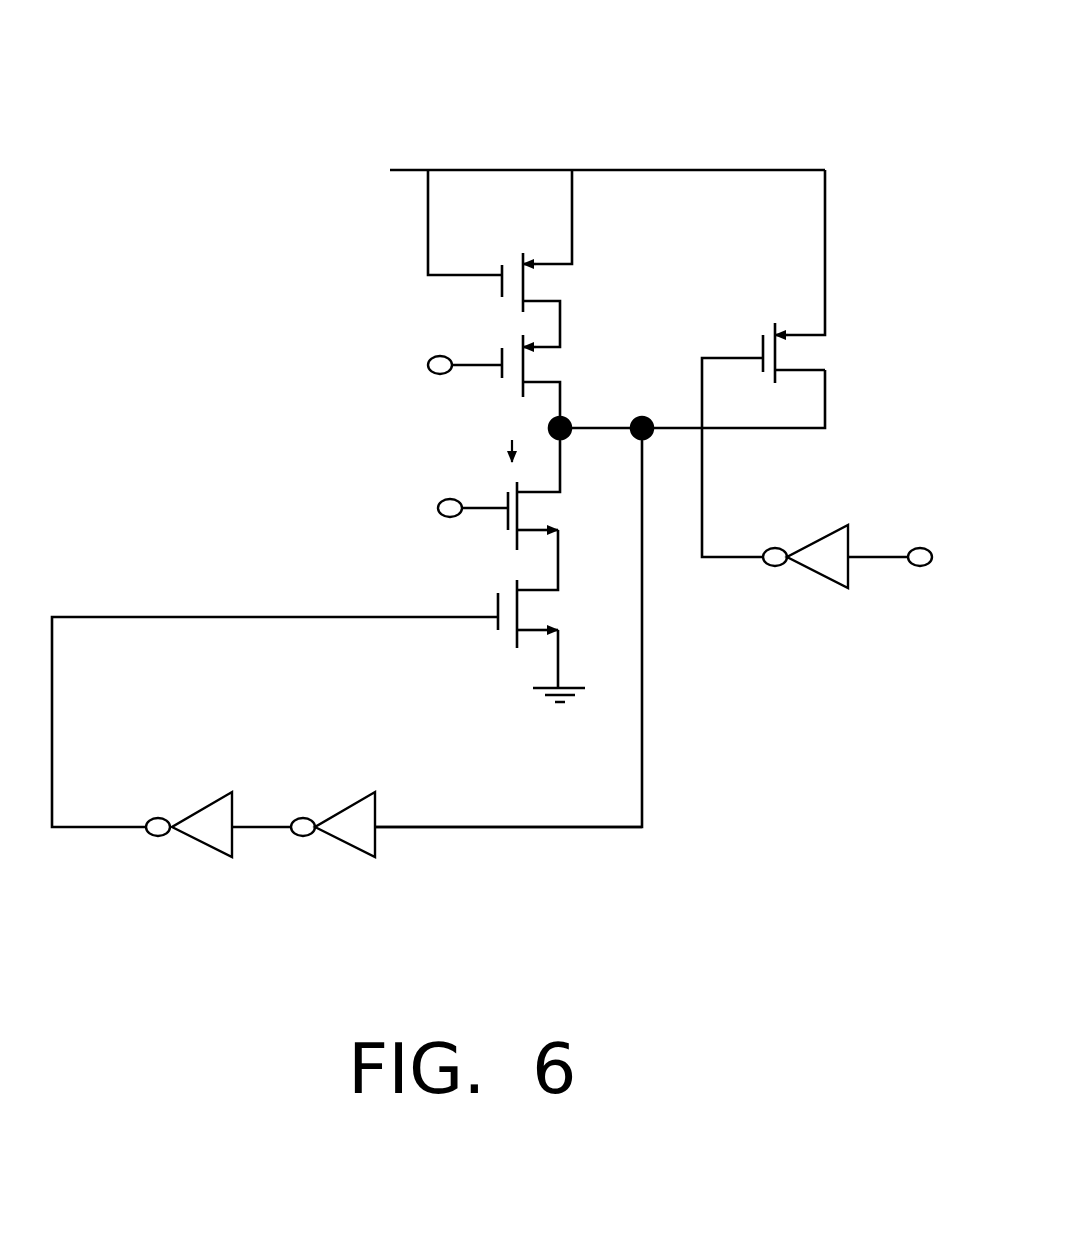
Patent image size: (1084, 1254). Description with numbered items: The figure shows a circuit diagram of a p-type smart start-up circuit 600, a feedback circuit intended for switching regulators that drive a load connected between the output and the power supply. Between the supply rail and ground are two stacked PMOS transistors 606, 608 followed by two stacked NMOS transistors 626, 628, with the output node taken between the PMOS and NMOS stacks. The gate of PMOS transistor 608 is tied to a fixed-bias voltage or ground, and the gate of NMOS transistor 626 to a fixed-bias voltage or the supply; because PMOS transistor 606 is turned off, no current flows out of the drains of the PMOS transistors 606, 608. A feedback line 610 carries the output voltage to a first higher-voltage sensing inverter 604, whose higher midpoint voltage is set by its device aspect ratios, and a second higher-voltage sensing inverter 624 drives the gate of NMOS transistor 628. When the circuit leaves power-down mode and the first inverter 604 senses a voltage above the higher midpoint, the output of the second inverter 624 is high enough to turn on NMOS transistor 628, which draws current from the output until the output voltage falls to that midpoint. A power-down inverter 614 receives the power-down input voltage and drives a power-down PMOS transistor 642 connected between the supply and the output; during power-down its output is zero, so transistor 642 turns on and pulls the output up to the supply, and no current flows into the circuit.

The p-type smart start-up circuit 600 is at (475, 89).
The PMOS transistor 606 is at (572, 272).
The PMOS transistor 608 is at (560, 349).
The NMOS transistor 626 is at (557, 506).
The NMOS transistor 628 is at (557, 600).
The power-down PMOS transistor 642 is at (825, 328).
The power-down inverter 614 is at (823, 585).
The first higher-voltage sensing inverter 604 is at (342, 845).
The second higher-voltage sensing inverter 624 is at (189, 838).
The feedback line 610 is at (555, 840).